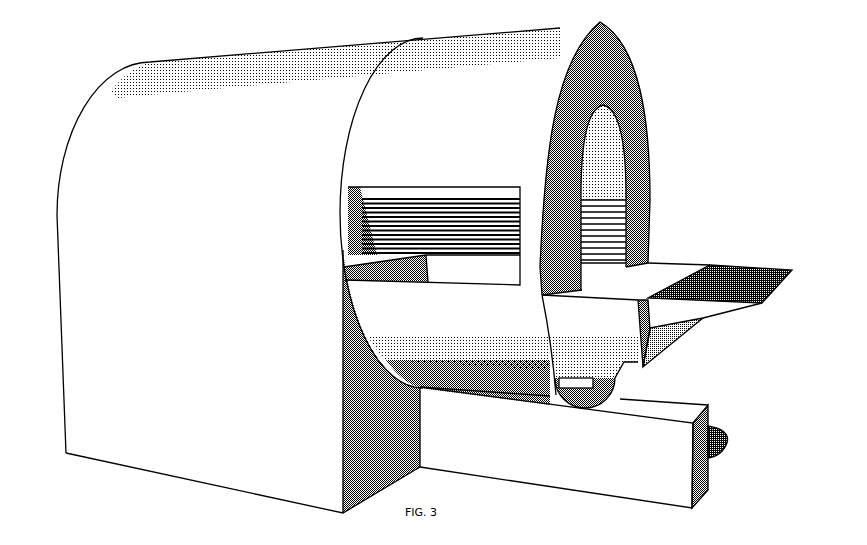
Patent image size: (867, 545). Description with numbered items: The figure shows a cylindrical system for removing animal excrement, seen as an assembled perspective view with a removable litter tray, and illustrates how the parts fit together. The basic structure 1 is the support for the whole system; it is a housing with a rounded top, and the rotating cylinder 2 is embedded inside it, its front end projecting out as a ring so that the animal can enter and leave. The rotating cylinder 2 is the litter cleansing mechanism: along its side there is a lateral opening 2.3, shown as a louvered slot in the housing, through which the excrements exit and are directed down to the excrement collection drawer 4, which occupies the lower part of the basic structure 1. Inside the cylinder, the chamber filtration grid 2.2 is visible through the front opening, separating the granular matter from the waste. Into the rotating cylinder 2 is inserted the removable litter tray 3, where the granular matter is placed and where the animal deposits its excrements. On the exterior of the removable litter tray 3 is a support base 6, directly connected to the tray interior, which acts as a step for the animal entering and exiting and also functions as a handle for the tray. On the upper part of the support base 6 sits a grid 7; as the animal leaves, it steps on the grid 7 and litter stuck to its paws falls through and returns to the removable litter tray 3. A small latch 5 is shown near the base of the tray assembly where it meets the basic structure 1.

The basic structure 1 is at (85, 425).
The rotating cylinder 2 is at (542, 50).
The chamber filtration grid 2.2 is at (627, 212).
The rotating cylinder lateral opening 2.3 is at (340, 233).
The removable litter tray 3 is at (615, 338).
The excrement collection drawer 4 is at (662, 452).
The latch 5 is at (595, 383).
The support base 6 is at (678, 310).
The support base grid 7 is at (741, 266).